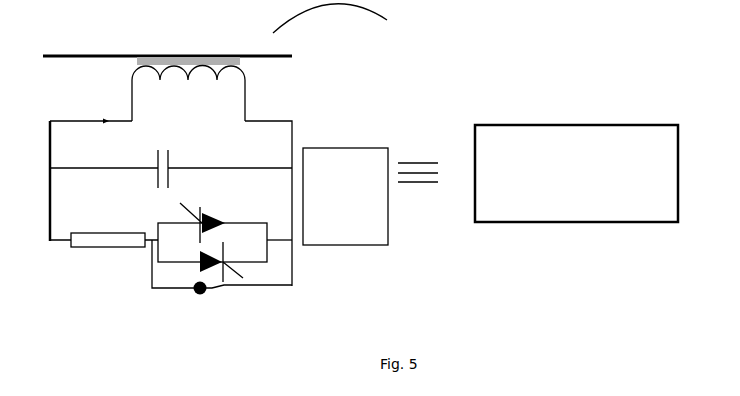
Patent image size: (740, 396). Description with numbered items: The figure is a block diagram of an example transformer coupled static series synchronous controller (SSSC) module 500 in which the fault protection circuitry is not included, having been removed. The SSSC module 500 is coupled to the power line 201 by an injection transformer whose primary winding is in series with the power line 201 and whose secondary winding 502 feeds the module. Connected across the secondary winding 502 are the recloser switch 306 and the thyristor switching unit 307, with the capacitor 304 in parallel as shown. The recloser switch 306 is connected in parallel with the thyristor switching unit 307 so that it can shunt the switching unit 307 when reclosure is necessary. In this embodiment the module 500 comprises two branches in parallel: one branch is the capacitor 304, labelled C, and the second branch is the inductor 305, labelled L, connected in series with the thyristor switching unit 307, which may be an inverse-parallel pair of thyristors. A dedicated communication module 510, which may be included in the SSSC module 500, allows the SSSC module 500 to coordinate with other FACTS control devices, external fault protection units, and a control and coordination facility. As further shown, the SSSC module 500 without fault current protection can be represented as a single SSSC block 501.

The power line 201 is at (105, 63).
The static series synchronous controller (SSSC) module 500 is at (340, 24).
The SSSC block 501 is at (637, 125).
The secondary winding 502 is at (187, 75).
The capacitor 304 is at (167, 151).
The inductor 305 is at (95, 248).
The recloser switch 306 is at (213, 294).
The thyristor switching unit 307 is at (235, 245).
The dedicated communication module 510 is at (373, 245).